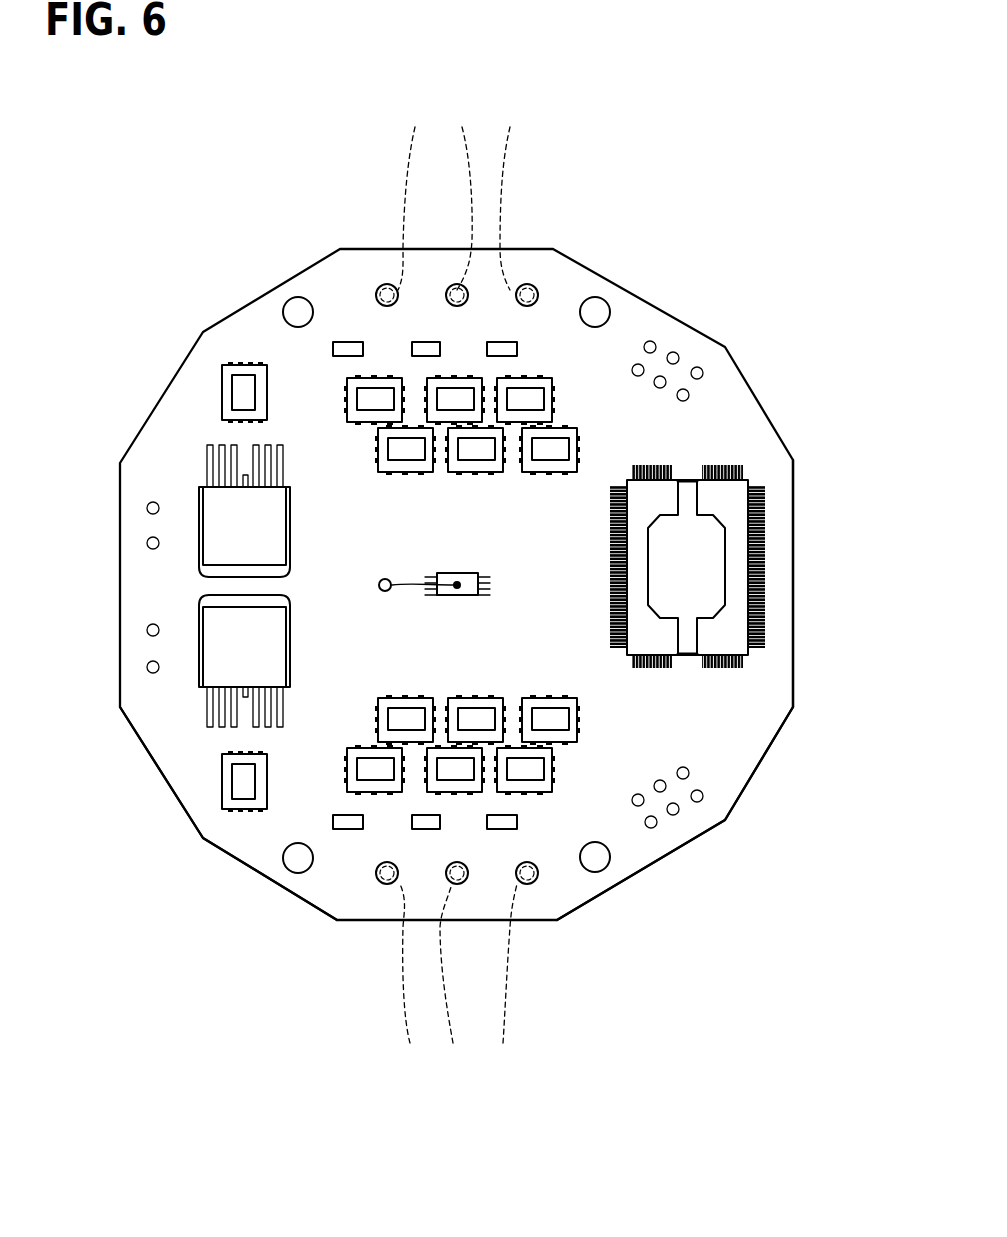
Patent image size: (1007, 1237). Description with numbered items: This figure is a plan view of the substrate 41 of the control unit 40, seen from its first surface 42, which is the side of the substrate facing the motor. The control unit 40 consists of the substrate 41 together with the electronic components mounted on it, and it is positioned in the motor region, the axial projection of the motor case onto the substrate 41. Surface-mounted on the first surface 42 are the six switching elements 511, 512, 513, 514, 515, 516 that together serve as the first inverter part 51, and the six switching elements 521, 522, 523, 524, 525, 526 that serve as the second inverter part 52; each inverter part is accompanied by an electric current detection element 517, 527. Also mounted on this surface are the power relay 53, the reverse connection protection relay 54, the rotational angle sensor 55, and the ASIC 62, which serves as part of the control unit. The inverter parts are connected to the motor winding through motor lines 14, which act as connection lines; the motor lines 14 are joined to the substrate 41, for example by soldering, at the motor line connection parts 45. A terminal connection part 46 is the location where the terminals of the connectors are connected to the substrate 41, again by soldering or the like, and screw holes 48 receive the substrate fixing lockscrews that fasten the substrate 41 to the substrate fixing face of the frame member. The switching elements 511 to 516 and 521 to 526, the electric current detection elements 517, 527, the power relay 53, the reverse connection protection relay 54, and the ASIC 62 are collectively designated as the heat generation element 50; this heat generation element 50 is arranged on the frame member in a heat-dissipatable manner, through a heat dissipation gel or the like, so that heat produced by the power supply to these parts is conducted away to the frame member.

The motor line 14 is at (459, 585).
The control unit 40 is at (706, 872).
The substrate 41 is at (795, 647).
The first surface 42 is at (742, 740).
The motor line connection part 45 is at (386, 286).
The terminal connection part 46 is at (672, 356).
The screw hole 48 is at (287, 303).
The heat generation element 50 is at (213, 831).
The first inverter part 51 is at (430, 465).
The switching element 511 is at (417, 467).
The switching element 512 is at (488, 464).
The switching element 513 is at (558, 466).
The switching element 514 is at (358, 400).
The switching element 515 is at (440, 414).
The switching element 516 is at (512, 415).
The electric current detection element 517 is at (347, 345).
The second inverter part 52 is at (453, 727).
The switching element 521 is at (570, 703).
The switching element 522 is at (467, 703).
The switching element 523 is at (393, 703).
The switching element 524 is at (548, 768).
The switching element 525 is at (468, 789).
The switching element 526 is at (352, 770).
The electric current detection element 527 is at (347, 827).
The power relay 53 is at (223, 517).
The reverse connection protection relay 54 is at (245, 395).
The rotational angle sensor 55 is at (465, 589).
The ASIC 62 is at (737, 509).